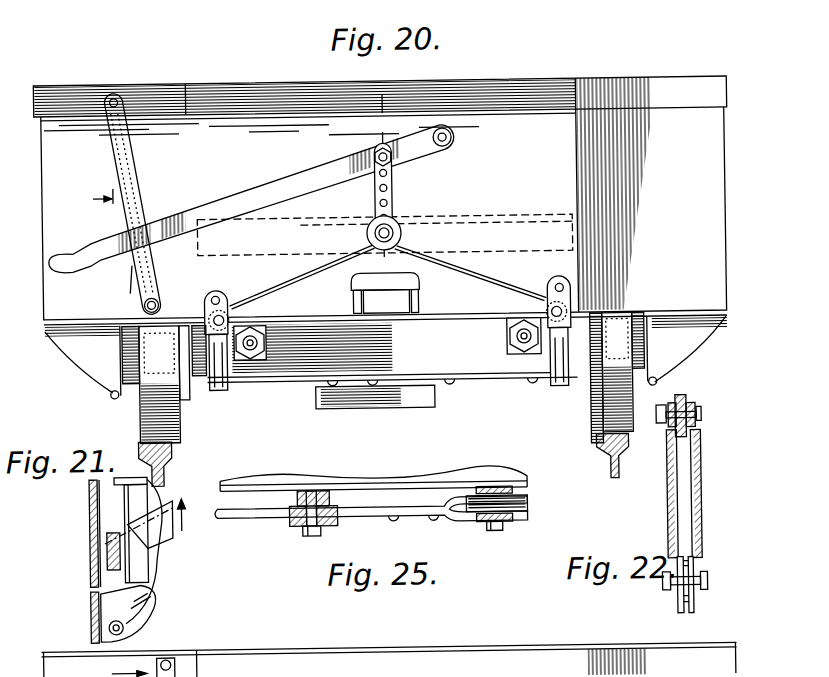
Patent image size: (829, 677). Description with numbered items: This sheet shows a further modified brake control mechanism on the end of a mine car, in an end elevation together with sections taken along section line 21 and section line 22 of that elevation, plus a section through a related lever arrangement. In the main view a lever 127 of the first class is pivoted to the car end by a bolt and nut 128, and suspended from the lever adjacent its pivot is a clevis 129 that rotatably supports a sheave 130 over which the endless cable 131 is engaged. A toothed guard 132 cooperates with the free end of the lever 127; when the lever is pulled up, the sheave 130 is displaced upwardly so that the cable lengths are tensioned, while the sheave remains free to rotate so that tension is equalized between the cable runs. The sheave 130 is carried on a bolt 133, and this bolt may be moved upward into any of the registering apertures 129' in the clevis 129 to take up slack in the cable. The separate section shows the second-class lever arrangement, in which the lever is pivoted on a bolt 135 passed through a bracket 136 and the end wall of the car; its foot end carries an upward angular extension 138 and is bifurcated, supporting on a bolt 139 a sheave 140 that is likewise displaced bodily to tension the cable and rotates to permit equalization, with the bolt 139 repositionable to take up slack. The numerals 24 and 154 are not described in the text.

In FIG. 20, the section line 21— 21 is at (114, 247).
In FIG. 20, the section line 22— 22 is at (383, 186).
In FIG. 21, the section line for Fig. 24 is at (129, 665).
In FIG. 20, the lever of the first class 127 is at (247, 150).
In FIG. 21, the lever of the first class 127 is at (163, 500).
In FIG. 22, the lever of the first class 127 is at (682, 399).
In FIG. 20, the bolt and nut 128 is at (455, 137).
In FIG. 20, the clevis 129 is at (410, 192).
In FIG. 22, the clevis 129 is at (713, 493).
In FIG. 20, the registering apertures 129' is at (355, 195).
In FIG. 22, the registering apertures 129' is at (724, 519).
In FIG. 20, the sheave 130 is at (372, 242).
In FIG. 22, the sheave 130 is at (688, 612).
In FIG. 20, the endless cable 131 is at (312, 249).
In FIG. 20, the toothed guard 132 is at (125, 150).
In FIG. 21, the toothed guard 132 is at (133, 546).
In FIG. 20, the bolt 133 is at (398, 222).
In FIG. 22, the bolt 133 is at (660, 587).
In FIG. 25, the bolt 135 is at (307, 534).
In FIG. 25, the bracket 136 is at (290, 527).
In FIG. 25, the upward angular extension 138 is at (512, 522).
In FIG. 25, the bolt 139 is at (490, 533).
In FIG. 25, the sheave 140 is at (520, 498).
In FIG. 25, the forked bar 154 is at (377, 510).